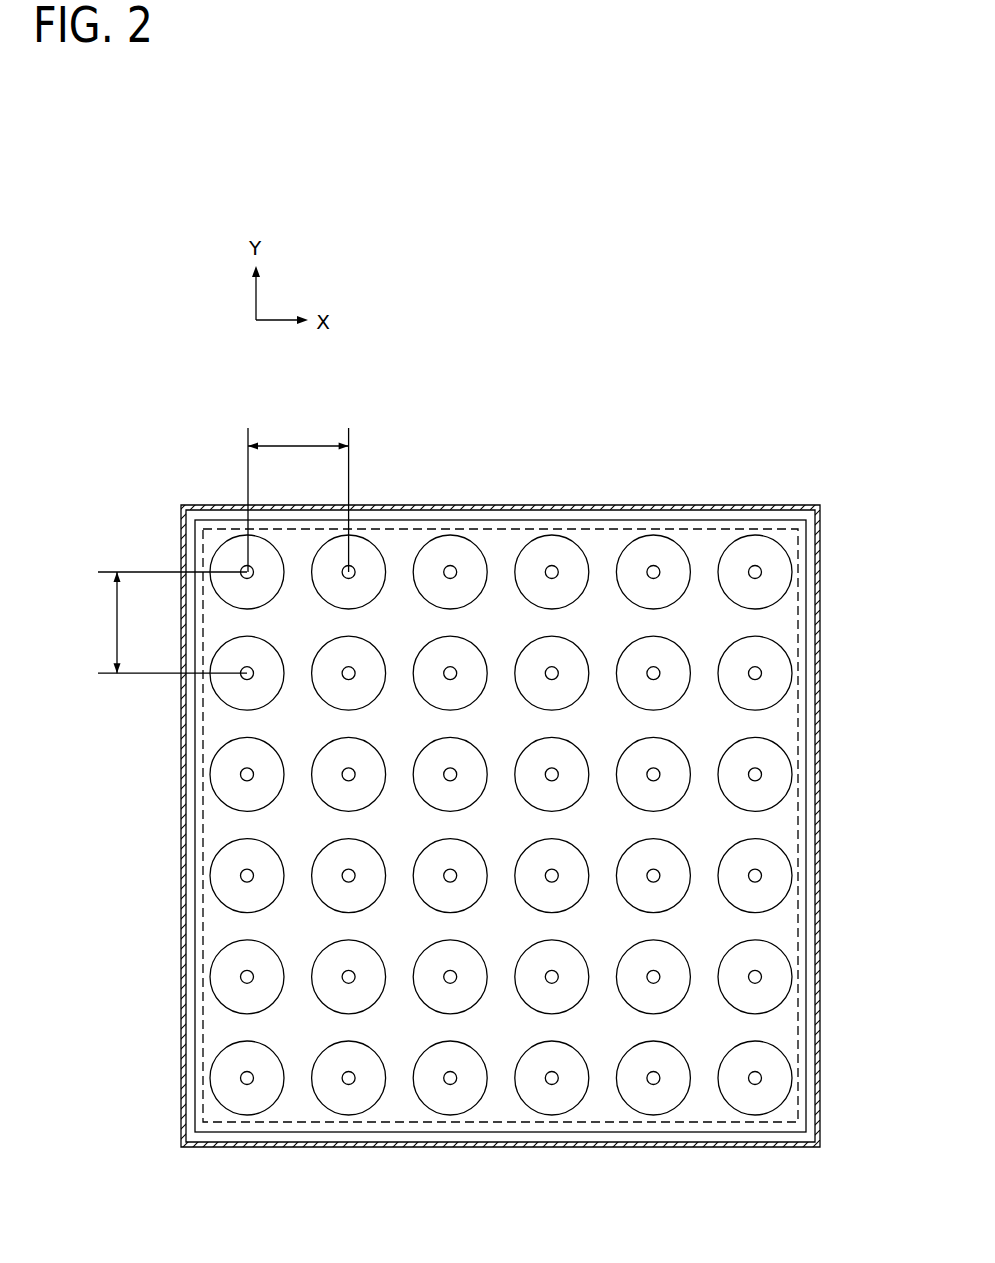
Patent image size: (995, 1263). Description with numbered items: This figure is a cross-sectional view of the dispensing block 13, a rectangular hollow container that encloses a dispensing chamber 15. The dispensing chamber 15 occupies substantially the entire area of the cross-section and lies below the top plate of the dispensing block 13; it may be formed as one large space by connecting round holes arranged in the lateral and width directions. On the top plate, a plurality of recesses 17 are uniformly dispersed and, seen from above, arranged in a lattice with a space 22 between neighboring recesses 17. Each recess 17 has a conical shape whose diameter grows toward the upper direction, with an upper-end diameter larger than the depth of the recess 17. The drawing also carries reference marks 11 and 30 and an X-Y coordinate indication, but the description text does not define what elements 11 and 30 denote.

The substrate / outer frame 11 is at (532, 505).
The dispensing block 13 is at (806, 728).
The dispensing chamber 15 is at (783, 832).
The recess 17 is at (226, 763).
The space 22 is at (88, 604).
The center opening 30 is at (652, 565).